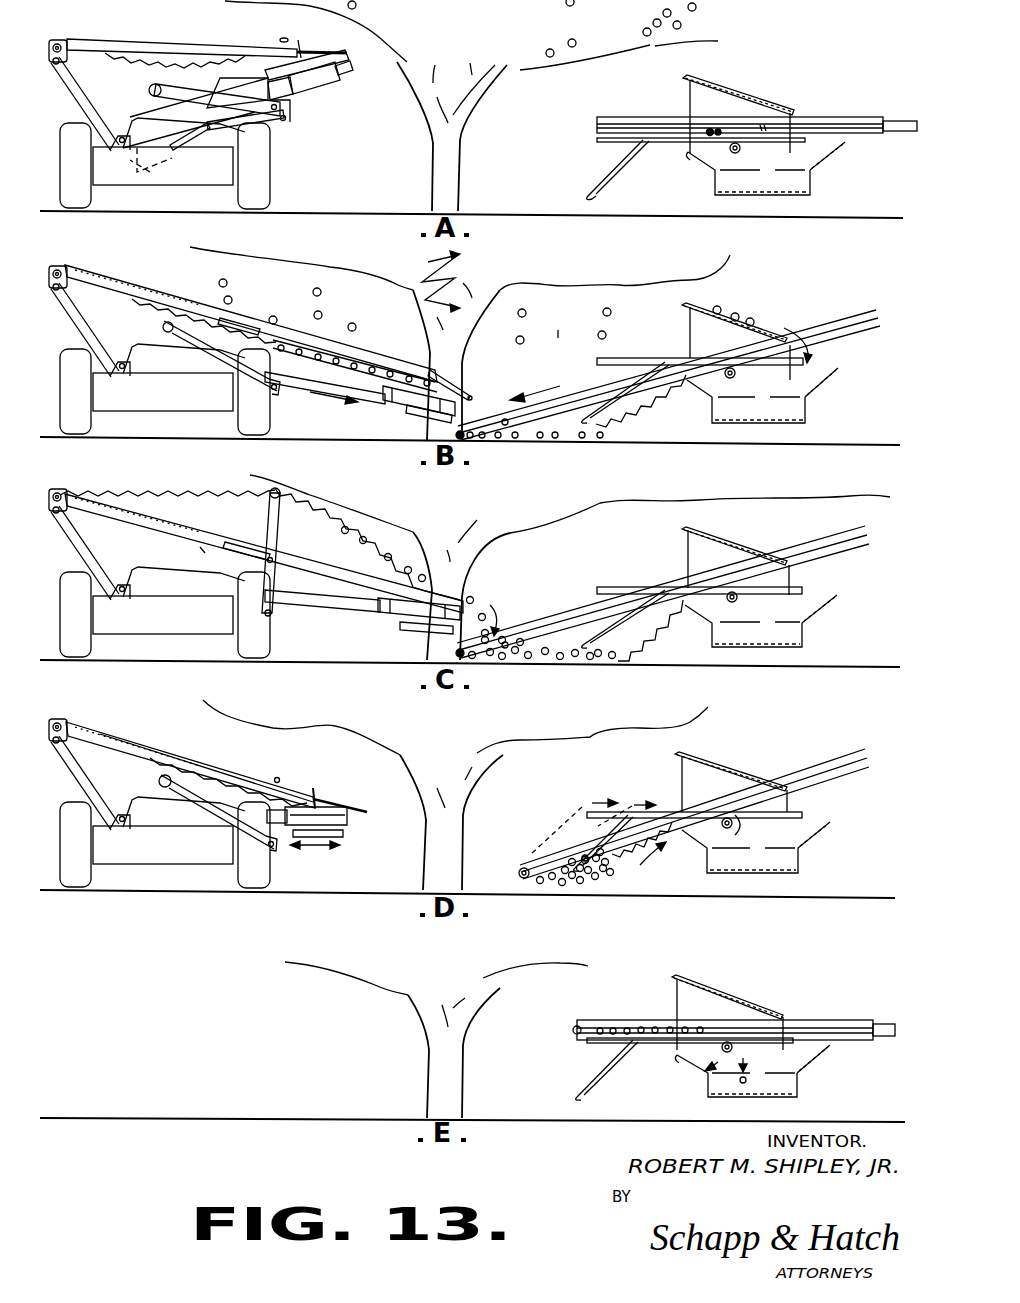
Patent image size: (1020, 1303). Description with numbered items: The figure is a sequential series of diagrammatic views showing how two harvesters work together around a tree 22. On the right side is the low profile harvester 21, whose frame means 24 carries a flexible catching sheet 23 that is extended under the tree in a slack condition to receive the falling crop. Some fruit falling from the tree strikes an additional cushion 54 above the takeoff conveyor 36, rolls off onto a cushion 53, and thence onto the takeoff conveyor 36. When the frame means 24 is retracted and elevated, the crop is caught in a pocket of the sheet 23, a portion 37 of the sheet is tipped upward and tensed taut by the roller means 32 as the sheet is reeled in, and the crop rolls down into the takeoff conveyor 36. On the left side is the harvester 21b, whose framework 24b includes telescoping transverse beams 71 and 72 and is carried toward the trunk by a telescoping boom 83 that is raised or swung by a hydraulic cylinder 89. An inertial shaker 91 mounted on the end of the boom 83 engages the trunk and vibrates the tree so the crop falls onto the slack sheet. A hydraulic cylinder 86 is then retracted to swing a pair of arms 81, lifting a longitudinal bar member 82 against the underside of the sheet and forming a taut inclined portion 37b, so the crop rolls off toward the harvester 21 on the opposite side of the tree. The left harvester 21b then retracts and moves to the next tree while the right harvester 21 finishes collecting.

The low profile harvester 21 is at (733, 575).
The left-hand harvester 21b is at (204, 123).
The tree 22 is at (470, 30).
The flexible catching sheet 23 is at (620, 422).
The frame means 24 is at (502, 397).
The framework 24b is at (320, 325).
The roller means 32 is at (714, 170).
The takeoff conveyor 36 is at (810, 412).
The inclined portion of the sheet 37 is at (735, 143).
The taut inclined portion 37b is at (360, 530).
The cushion 53 is at (840, 148).
The additional cushion 54 is at (705, 83).
The transverse beam 71 is at (118, 292).
The transverse beam 72 is at (360, 356).
The arms 81 is at (213, 357).
The longitudinal bar member 82 is at (163, 327).
The boom 83 is at (300, 605).
The hydraulic cylinder 86 is at (250, 130).
The hydraulic cylinder 89 is at (172, 170).
The inertial shaker 91 is at (394, 411).